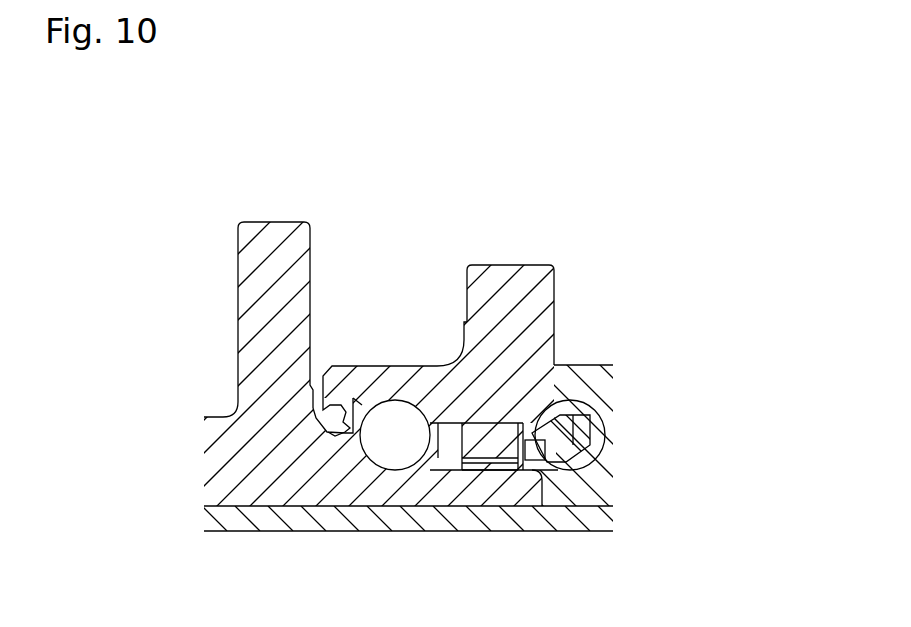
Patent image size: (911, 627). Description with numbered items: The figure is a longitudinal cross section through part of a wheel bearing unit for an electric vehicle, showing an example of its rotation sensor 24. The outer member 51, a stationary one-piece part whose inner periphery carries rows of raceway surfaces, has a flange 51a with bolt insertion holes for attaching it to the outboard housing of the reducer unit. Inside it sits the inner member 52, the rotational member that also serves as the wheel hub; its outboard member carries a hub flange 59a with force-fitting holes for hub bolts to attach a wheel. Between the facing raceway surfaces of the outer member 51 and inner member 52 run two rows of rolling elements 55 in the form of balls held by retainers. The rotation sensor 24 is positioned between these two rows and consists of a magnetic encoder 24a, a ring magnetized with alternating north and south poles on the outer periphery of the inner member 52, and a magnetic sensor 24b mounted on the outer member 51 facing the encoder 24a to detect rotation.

The rotation sensor 24 is at (812, 300).
The magnetic encoder 24a is at (490, 468).
The magnetic sensor 24b is at (548, 372).
The outer member 51 is at (420, 365).
The flange 51a is at (502, 278).
The inner member 52 is at (238, 470).
The rolling elements 55 is at (392, 412).
The hub flange 59a is at (257, 247).